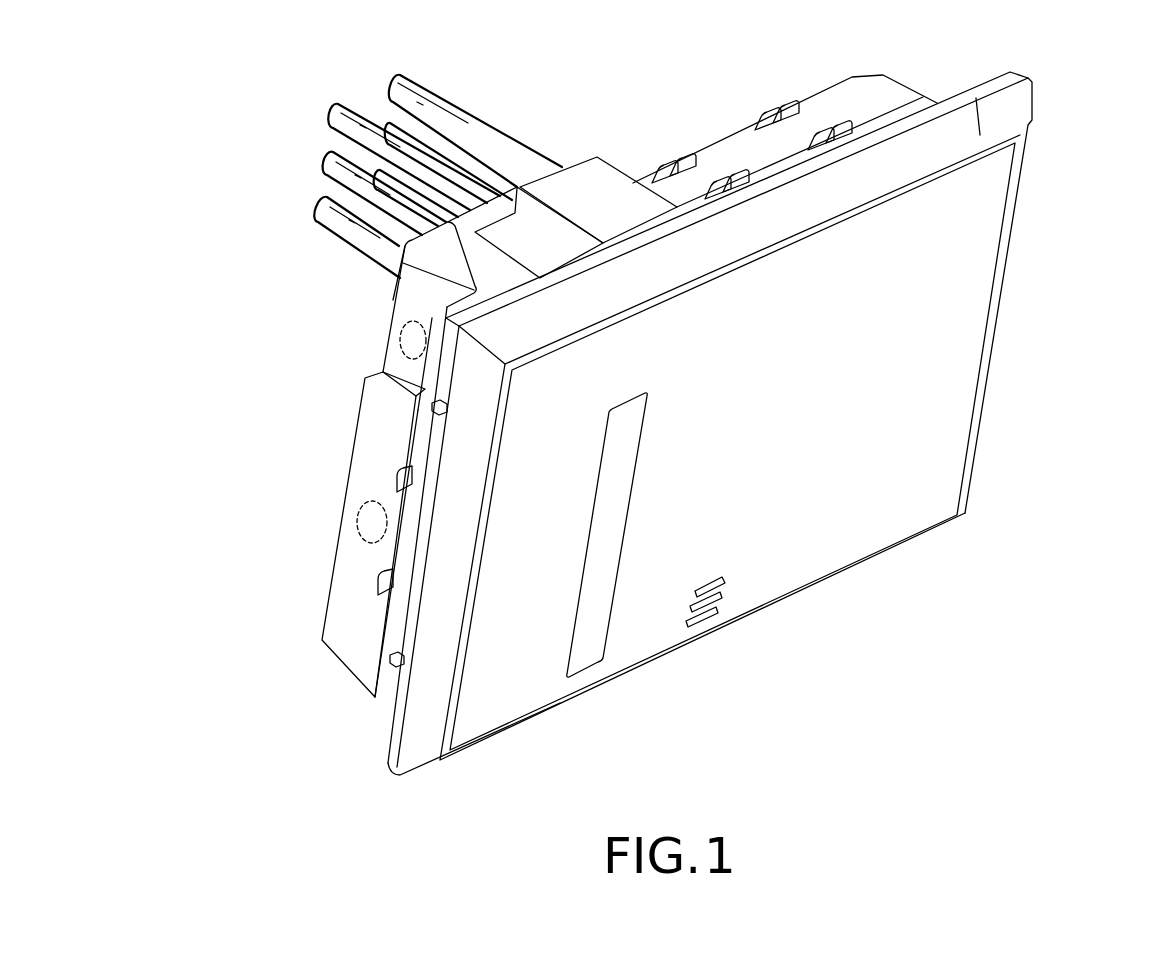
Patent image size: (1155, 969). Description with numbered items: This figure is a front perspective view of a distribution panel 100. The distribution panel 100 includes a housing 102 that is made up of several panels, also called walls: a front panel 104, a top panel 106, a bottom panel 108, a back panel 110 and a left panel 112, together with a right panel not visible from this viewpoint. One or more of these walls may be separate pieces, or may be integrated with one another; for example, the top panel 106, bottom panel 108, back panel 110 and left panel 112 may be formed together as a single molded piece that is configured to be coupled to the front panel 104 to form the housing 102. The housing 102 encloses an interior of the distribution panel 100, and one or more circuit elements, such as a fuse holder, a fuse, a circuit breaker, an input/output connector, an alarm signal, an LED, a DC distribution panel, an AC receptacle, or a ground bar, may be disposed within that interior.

The distribution panel 100 is at (900, 643).
The housing 102 is at (935, 98).
The front panel 104 is at (960, 316).
The top panel 106 is at (593, 177).
The bottom panel 108 is at (382, 703).
The back panel 110 is at (342, 519).
The left panel 112 is at (352, 593).